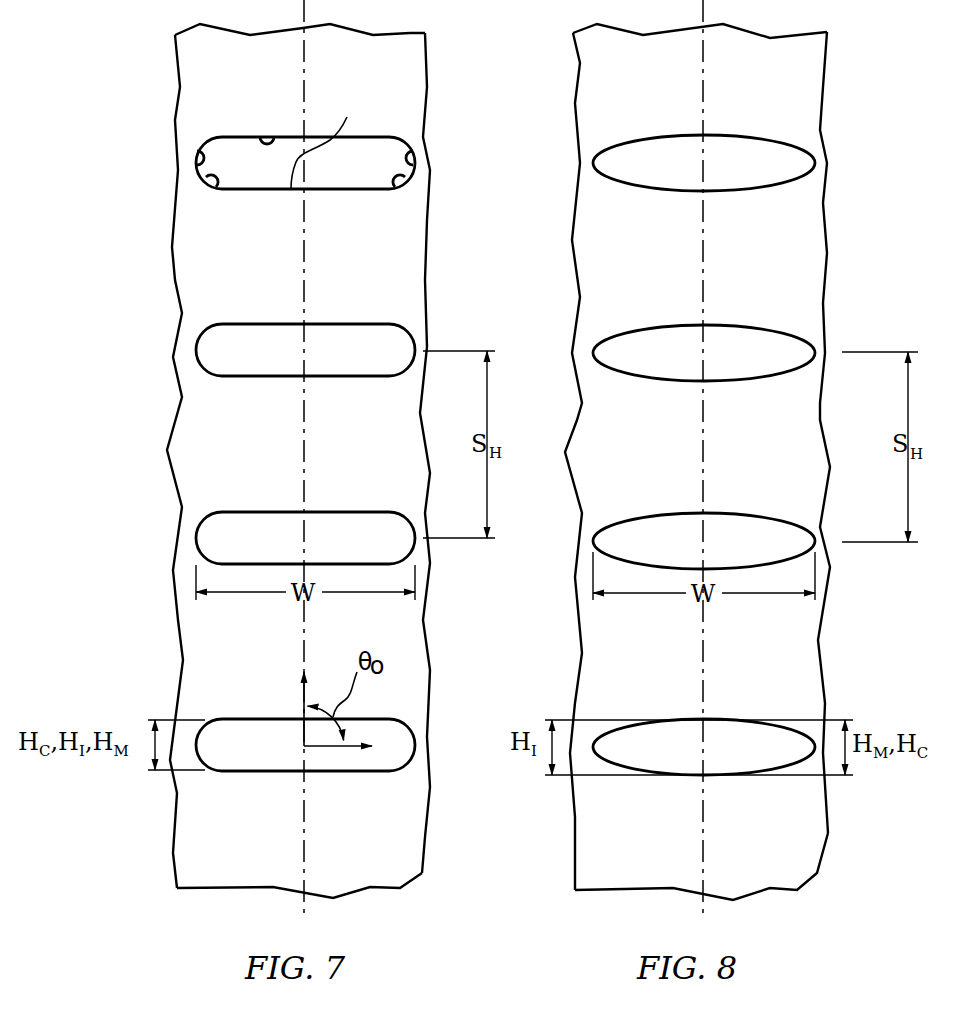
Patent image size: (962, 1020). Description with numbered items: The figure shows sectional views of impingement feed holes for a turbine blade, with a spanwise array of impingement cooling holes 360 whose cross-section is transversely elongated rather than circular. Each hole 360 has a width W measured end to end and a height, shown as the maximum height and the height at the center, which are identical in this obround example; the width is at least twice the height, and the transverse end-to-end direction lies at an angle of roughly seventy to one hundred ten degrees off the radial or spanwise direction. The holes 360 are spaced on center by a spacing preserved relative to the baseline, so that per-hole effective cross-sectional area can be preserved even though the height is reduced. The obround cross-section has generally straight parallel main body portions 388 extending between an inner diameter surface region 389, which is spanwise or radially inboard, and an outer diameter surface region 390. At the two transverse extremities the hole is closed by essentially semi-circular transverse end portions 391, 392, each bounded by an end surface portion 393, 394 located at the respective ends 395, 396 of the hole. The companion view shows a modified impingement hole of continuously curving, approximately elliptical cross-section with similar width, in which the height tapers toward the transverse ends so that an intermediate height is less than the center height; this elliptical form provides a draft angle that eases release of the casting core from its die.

The impingement cooling hole 360 is at (392, 124).
The main body portion 388 is at (292, 152).
The inner diameter surface region 389 is at (333, 139).
The outer diameter surface region 390 is at (275, 136).
The transverse end portion 391 is at (394, 154).
The transverse end portion 392 is at (218, 156).
The end surface portion 393 is at (392, 189).
The end surface portion 394 is at (222, 189).
The end 395 is at (415, 153).
The end 396 is at (197, 152).